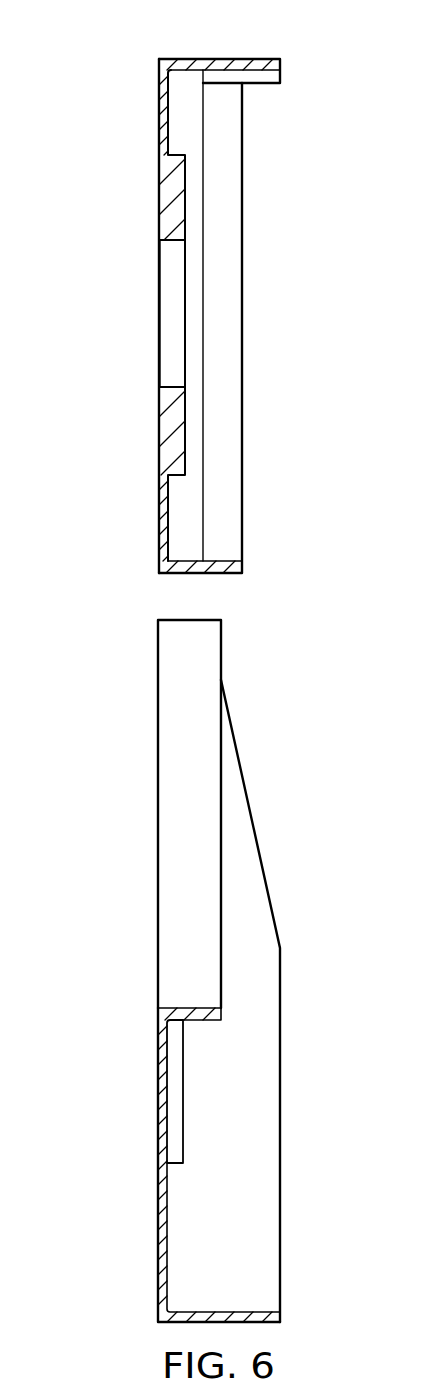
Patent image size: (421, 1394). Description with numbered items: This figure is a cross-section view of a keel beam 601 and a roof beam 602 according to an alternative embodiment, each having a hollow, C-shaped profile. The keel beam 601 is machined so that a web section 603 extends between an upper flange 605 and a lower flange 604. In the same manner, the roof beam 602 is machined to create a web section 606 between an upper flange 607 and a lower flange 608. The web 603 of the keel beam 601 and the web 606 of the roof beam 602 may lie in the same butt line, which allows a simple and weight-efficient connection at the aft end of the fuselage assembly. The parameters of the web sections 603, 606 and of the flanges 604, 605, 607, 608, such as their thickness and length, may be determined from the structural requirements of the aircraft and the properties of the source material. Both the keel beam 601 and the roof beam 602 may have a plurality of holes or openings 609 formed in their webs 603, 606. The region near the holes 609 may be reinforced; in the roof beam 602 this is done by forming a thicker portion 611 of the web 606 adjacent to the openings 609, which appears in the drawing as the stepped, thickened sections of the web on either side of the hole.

The keel beam 601 is at (116, 780).
The roof beam 602 is at (117, 191).
The web section 603 is at (158, 1242).
The lower flange 604 is at (270, 1225).
The upper flange 605 is at (167, 877).
The web section 606 is at (158, 524).
The upper flange 607 is at (218, 59).
The lower flange 608 is at (215, 560).
The holes or openings 609 is at (143, 310).
The thicker portion 611 is at (185, 195).